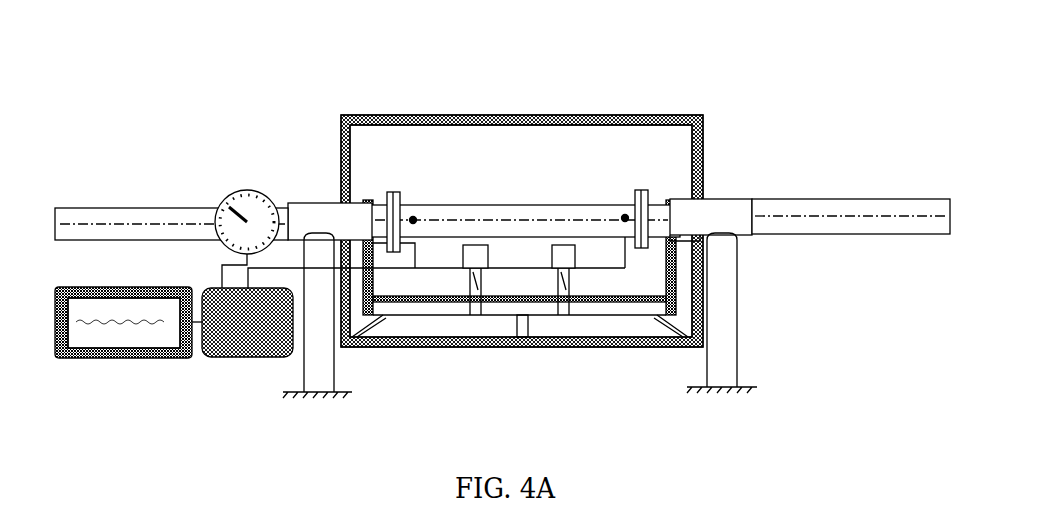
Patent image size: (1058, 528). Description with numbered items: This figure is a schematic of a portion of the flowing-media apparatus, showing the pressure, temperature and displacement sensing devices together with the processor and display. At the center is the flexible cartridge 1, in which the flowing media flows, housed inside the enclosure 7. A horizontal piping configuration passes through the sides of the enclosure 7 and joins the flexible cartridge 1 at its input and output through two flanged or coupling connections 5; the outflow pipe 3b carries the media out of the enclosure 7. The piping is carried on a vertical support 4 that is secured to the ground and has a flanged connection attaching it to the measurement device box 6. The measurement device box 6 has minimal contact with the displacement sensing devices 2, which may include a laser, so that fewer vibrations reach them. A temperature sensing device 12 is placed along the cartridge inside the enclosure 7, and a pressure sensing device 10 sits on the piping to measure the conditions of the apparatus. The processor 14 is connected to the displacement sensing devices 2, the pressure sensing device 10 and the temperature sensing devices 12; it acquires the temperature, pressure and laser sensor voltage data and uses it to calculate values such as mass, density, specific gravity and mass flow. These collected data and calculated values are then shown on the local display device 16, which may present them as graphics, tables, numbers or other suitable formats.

The flexible cartridge 1 is at (510, 206).
The displacement sensing device 2 is at (478, 265).
The outflow pipe 3b is at (142, 210).
The vertical support 4 is at (728, 205).
The connection 5 is at (392, 192).
The measurement device box 6 is at (638, 318).
The enclosure 7 is at (448, 115).
The pressure sensing device 10 is at (247, 190).
The temperature sensing device 12 is at (414, 216).
The processor 14 is at (250, 357).
The local display device 16 is at (124, 358).